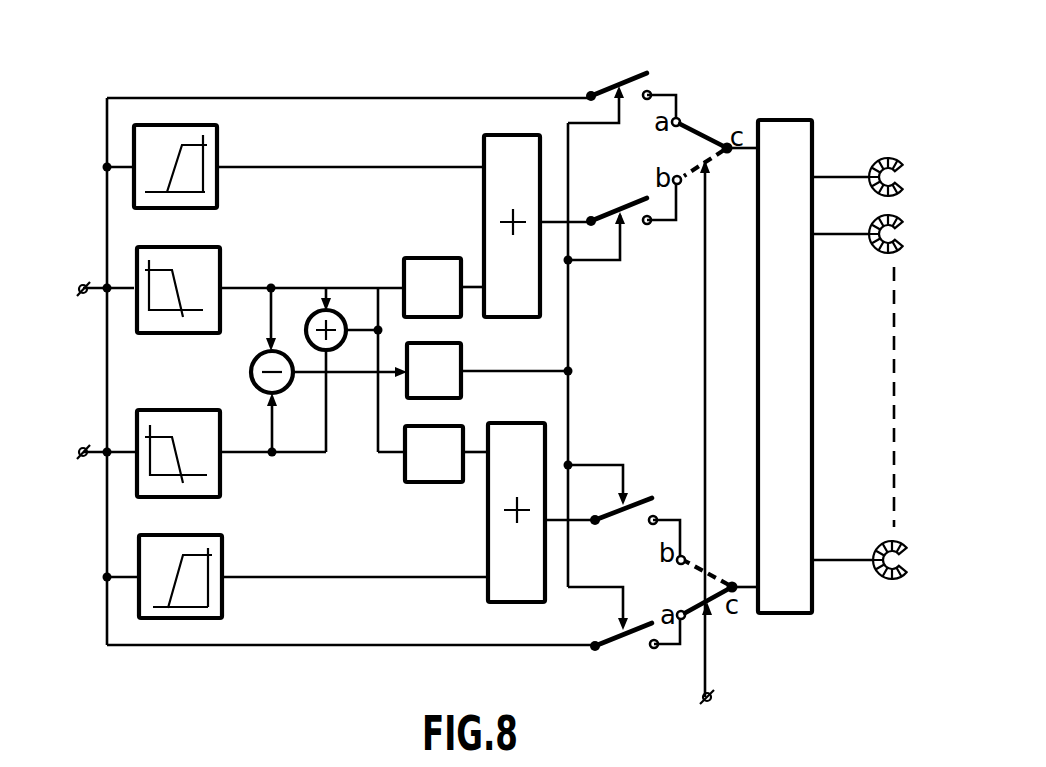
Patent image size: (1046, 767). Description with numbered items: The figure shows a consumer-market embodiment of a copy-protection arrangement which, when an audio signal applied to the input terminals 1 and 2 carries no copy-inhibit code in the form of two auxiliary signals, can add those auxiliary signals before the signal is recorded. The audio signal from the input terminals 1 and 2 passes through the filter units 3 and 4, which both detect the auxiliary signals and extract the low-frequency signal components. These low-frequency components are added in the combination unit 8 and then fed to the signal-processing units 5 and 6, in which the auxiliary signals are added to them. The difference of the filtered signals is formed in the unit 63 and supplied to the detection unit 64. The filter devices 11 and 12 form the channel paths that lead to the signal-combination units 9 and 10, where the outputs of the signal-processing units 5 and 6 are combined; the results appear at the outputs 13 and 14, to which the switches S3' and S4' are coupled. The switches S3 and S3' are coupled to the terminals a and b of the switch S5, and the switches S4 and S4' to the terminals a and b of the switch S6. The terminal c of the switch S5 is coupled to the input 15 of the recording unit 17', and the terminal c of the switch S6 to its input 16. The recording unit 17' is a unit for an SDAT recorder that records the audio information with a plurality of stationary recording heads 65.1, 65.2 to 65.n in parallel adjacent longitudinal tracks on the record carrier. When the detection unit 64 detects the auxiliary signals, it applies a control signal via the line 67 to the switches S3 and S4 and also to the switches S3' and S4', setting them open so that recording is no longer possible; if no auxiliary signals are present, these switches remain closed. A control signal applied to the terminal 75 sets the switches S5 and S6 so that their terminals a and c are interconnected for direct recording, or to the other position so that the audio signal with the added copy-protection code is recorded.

The input terminal 1 is at (87, 286).
The input terminal 2 is at (88, 458).
The filter unit 3 is at (222, 270).
The filter unit 4 is at (222, 477).
The signal-processing unit 5 is at (440, 257).
The signal-processing unit 6 is at (446, 484).
The signal-combination unit 8 is at (331, 306).
The signal-combination unit 9 is at (484, 192).
The signal-combination unit 10 is at (531, 421).
The filter device 11 is at (219, 192).
The filter device 12 is at (224, 603).
The output of combination unit 9 13 is at (545, 228).
The output of combination unit 10 14 is at (548, 526).
The input of the recording unit 15 is at (751, 155).
The input of the recording unit 16 is at (756, 583).
The recording unit 17' is at (785, 342).
The subtraction unit 63 is at (253, 360).
The detection unit 64 is at (462, 358).
The line 67 is at (527, 369).
The stationary recording head 65.1 is at (884, 157).
The stationary recording head 65.2 is at (877, 252).
The stationary recording head 65.n is at (875, 580).
The terminal 75 is at (717, 697).
The switch S3 is at (609, 72).
The switch S3' is at (613, 199).
The switch S4 is at (621, 656).
The switch S4' is at (626, 487).
The switch S5 is at (703, 133).
The switch S6 is at (697, 573).